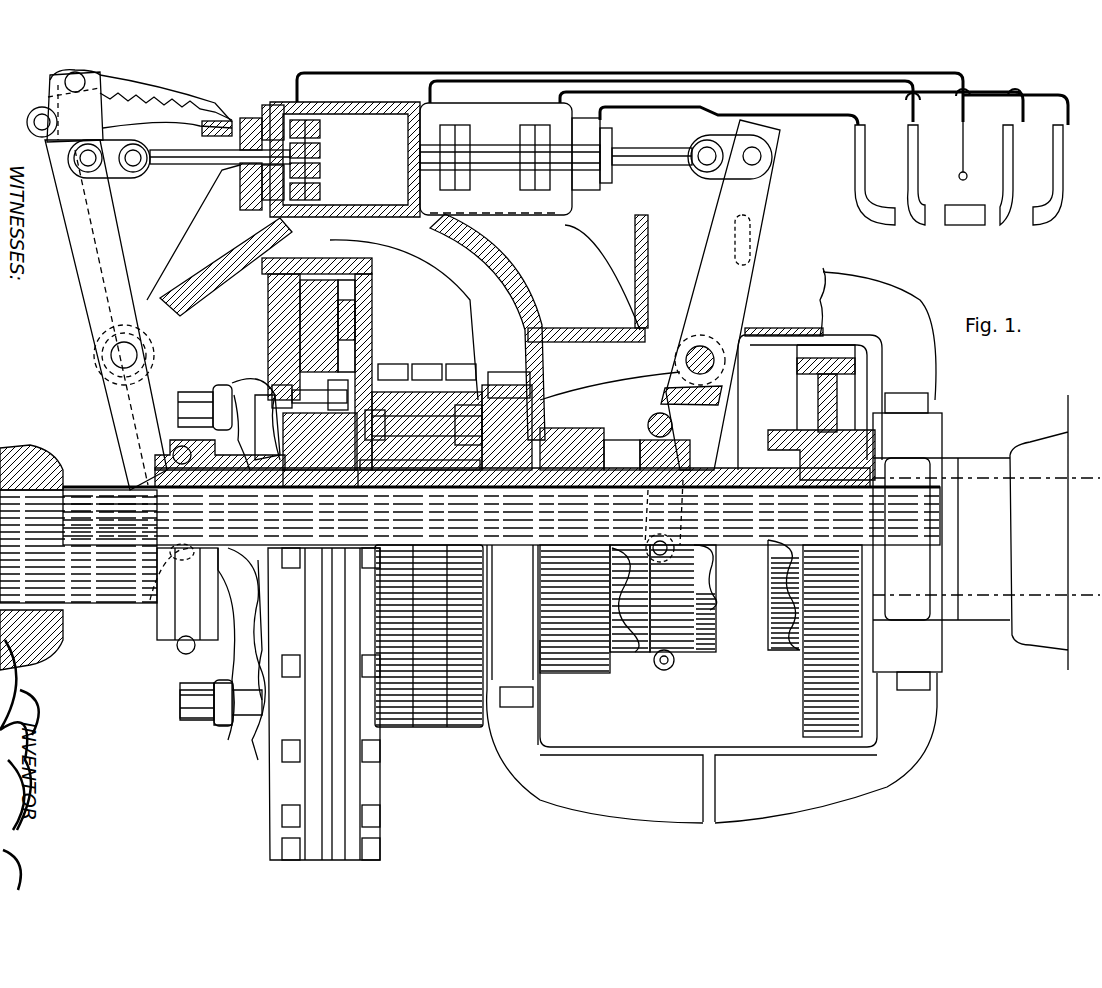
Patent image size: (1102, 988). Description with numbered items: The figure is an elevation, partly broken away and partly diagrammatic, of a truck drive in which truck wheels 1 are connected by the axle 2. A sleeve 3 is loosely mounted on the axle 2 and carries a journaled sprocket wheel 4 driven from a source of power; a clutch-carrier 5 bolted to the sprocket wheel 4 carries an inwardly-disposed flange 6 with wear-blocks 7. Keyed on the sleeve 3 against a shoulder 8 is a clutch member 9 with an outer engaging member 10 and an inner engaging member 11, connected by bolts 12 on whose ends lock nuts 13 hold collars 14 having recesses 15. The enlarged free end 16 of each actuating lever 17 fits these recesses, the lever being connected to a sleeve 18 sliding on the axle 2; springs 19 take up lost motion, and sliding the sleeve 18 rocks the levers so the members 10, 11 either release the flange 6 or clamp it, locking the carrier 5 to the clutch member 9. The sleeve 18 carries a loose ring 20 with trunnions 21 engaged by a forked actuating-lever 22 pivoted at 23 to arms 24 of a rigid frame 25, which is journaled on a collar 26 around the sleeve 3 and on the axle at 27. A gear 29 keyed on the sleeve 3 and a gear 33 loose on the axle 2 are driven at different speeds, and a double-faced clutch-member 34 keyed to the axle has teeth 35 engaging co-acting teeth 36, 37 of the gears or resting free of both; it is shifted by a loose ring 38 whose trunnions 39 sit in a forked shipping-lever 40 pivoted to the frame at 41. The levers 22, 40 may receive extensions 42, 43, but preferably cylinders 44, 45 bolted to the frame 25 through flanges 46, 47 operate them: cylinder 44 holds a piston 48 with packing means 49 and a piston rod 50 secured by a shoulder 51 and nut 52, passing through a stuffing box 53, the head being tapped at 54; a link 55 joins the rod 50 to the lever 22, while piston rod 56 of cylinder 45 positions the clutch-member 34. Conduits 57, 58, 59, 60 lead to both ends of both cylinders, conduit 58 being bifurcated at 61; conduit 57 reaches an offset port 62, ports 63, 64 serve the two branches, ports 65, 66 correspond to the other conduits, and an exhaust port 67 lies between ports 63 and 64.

The truck wheels 1 is at (20, 470).
The axle 2 is at (105, 598).
The sleeve 3 is at (445, 495).
The sprocket wheel 4 is at (428, 727).
The clutch-carrier 5 is at (375, 330).
The inwardly-disposed flange 6 is at (268, 288).
The wear-blocks 7 is at (305, 330).
The shoulder 8 is at (370, 488).
The clutch member 9 is at (330, 490).
The outer engaging member 10 is at (270, 318).
The inner engaging member 11 is at (372, 290).
The bolts 12 is at (340, 385).
The lock nuts 13 is at (197, 395).
The collars 14 is at (222, 385).
The recesses 15 is at (250, 660).
The enlarged free end 16 is at (235, 415).
The actuating lever 17 is at (258, 420).
The sleeve 18 is at (255, 490).
The springs 19 is at (300, 487).
The loose ring or band 20 is at (180, 618).
The trunnions 21 is at (178, 548).
The forked actuating-lever 22 is at (112, 405).
The pivot 23 is at (110, 352).
The arms 24 is at (219, 240).
The rigid frame 25 is at (500, 282).
The collar 26 is at (545, 410).
The frame journal on axle 27 is at (918, 518).
The gear 29 is at (582, 676).
The gear 33 is at (803, 698).
The double-faced clutch-member 34 is at (692, 652).
The teeth 35 is at (702, 545).
The co-acting teeth 36 is at (625, 656).
The co-acting teeth 37 is at (780, 568).
The loose ring 38 is at (716, 632).
The trunnions 39 is at (650, 545).
The forked shipping-lever 40 is at (745, 303).
The pivot 41 is at (712, 375).
The extension 42 is at (125, 95).
The extension 43 is at (772, 150).
The cylinder 44 is at (385, 140).
The cylinder 45 is at (585, 128).
The flange 46 is at (485, 145).
The flange 47 is at (480, 166).
The piston 48 is at (322, 140).
The packing means 49 is at (322, 192).
The piston rod 50 is at (205, 165).
The shoulder 51 is at (322, 152).
The nut 52 is at (322, 172).
The stuffing box 53 is at (245, 182).
The tapped cylinder head 54 is at (270, 110).
The link 55 is at (120, 175).
The piston rod 56 is at (630, 160).
The conduit 57 is at (968, 122).
The conduit 58 is at (880, 84).
The conduit 59 is at (815, 96).
The conduit 60 is at (695, 110).
The bifurcation 61 is at (975, 76).
The port 62 is at (968, 177).
The port 63 is at (924, 226).
The port 64 is at (1006, 226).
The port 65 is at (1040, 226).
The port 66 is at (890, 226).
The exhaust port 67 is at (972, 226).